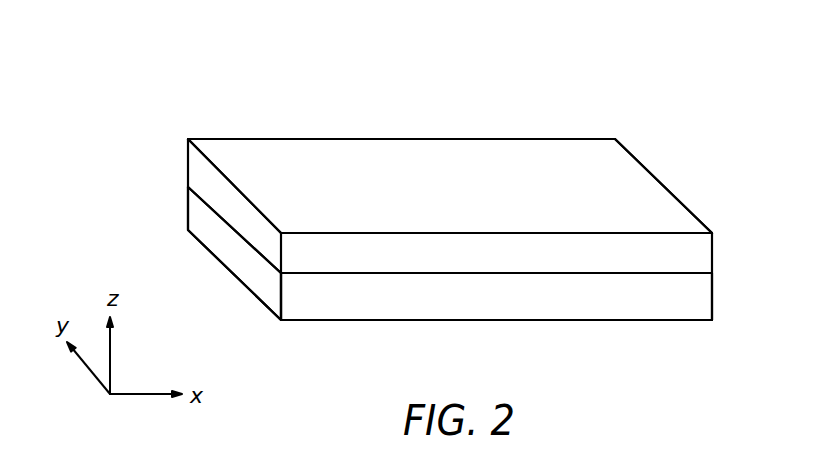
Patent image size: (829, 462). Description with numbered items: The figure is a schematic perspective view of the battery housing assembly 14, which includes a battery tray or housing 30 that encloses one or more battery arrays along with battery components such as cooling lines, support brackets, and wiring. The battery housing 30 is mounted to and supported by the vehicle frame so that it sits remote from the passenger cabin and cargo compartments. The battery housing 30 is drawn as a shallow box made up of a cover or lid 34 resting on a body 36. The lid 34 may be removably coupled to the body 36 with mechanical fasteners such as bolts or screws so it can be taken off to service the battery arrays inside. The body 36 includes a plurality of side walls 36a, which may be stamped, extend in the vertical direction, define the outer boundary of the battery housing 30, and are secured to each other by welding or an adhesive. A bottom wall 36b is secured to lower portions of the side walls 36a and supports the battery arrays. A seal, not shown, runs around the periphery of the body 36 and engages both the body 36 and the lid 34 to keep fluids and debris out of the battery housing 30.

The battery housing assembly 14 is at (368, 100).
The battery housing 30 is at (417, 141).
The lid 34 is at (518, 148).
The body 36 is at (368, 323).
The side walls 36a is at (232, 248).
The bottom wall 36b is at (598, 321).